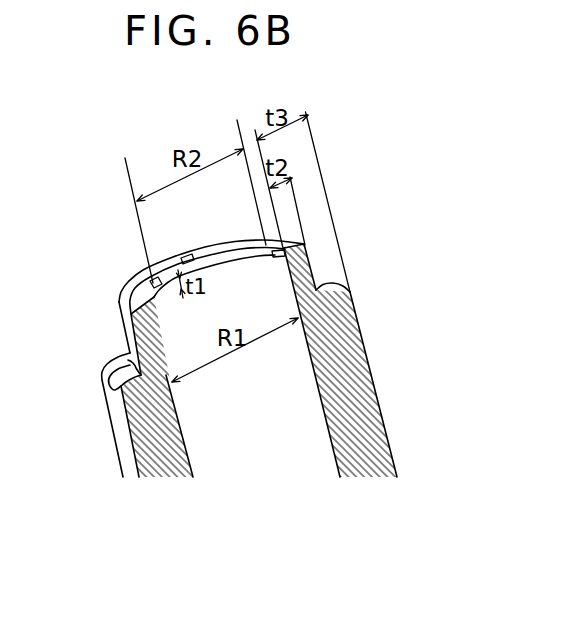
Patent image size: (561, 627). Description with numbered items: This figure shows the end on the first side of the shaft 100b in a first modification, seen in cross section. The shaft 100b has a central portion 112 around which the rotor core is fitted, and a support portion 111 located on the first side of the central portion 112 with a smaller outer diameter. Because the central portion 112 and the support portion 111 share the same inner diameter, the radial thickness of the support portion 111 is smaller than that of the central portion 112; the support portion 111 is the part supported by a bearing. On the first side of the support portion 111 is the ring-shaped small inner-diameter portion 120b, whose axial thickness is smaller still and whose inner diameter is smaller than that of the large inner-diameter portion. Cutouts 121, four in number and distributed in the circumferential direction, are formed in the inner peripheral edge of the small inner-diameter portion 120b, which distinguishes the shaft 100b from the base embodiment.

The shaft 100b is at (68, 192).
The support portion 111 is at (123, 328).
The central portion 112 is at (106, 399).
The small inner-diameter portion 120b is at (136, 292).
The cutouts 121 is at (185, 256).